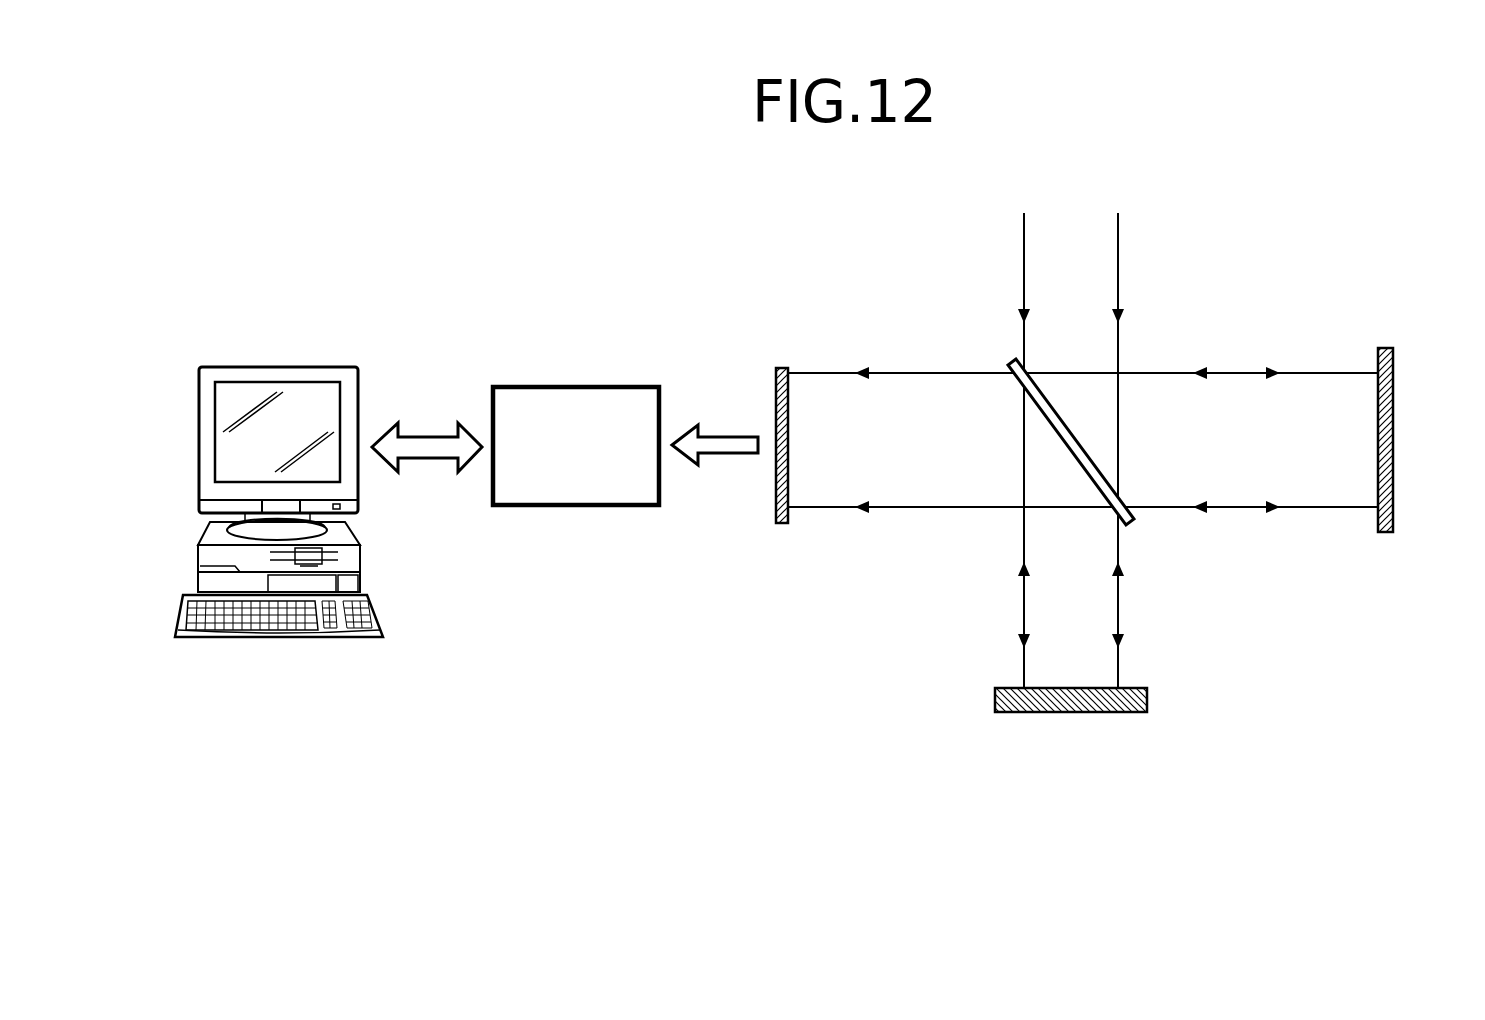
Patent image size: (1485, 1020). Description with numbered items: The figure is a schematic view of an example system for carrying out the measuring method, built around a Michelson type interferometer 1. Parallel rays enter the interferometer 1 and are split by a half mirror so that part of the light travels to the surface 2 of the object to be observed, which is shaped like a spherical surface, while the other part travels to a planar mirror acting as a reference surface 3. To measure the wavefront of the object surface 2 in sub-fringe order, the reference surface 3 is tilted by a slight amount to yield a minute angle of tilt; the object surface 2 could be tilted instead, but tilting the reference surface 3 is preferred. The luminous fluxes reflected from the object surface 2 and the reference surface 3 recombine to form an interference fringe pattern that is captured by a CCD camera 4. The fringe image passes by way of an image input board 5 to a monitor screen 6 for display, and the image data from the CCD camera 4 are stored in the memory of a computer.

The Michelson type interferometer 1 is at (1333, 248).
The surface of object to be observed 2 is at (1147, 688).
The reference surface 3 is at (1396, 512).
The CCD camera 4 is at (776, 503).
The image input board 5 is at (575, 388).
The monitor screen 6 is at (299, 368).